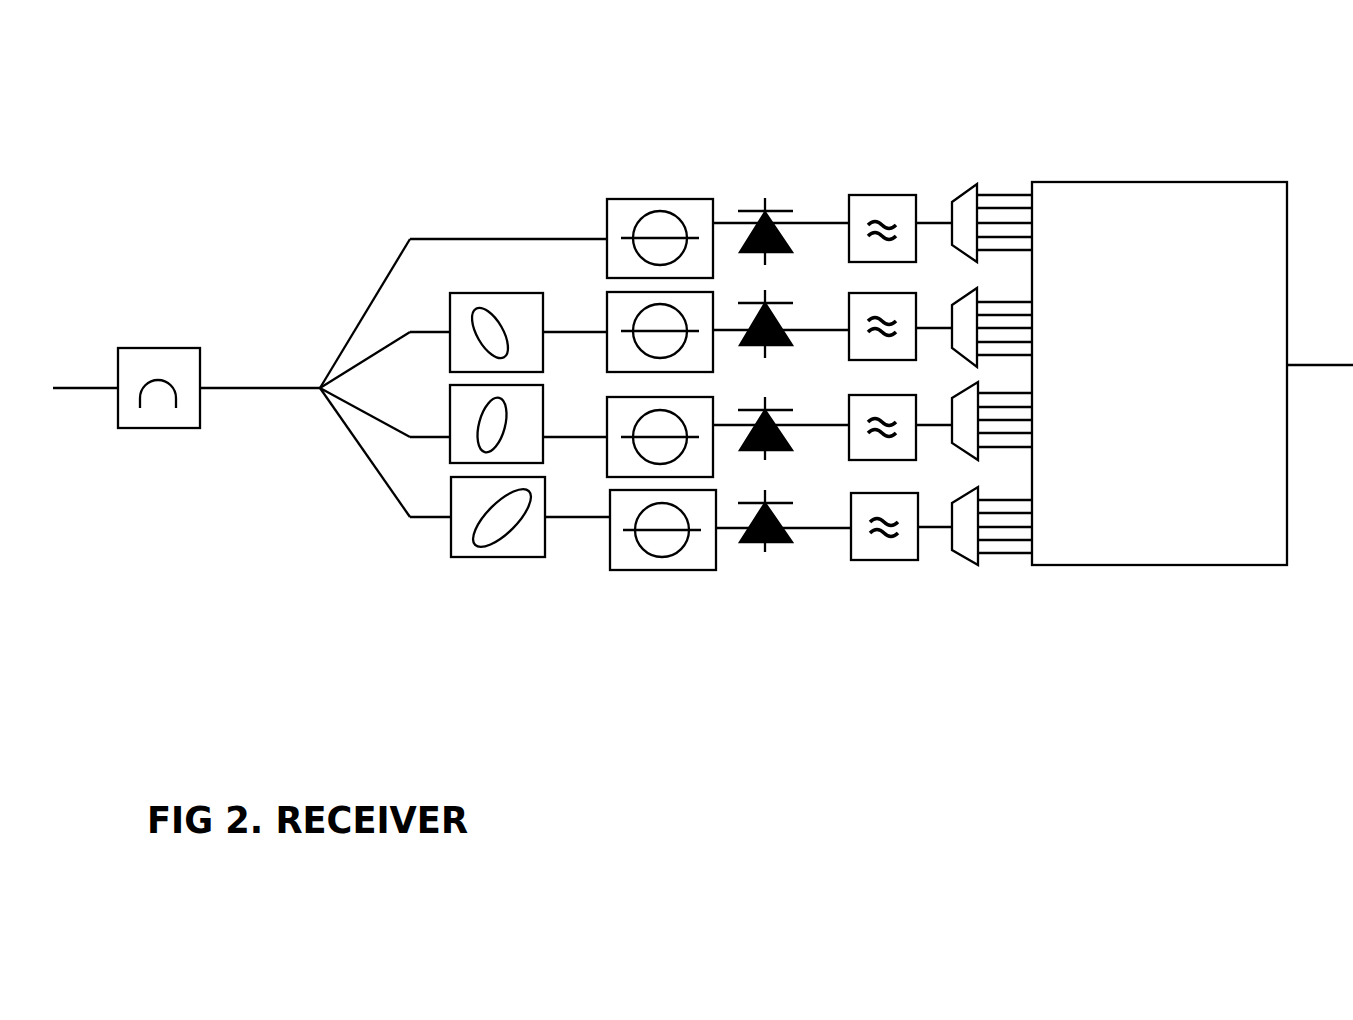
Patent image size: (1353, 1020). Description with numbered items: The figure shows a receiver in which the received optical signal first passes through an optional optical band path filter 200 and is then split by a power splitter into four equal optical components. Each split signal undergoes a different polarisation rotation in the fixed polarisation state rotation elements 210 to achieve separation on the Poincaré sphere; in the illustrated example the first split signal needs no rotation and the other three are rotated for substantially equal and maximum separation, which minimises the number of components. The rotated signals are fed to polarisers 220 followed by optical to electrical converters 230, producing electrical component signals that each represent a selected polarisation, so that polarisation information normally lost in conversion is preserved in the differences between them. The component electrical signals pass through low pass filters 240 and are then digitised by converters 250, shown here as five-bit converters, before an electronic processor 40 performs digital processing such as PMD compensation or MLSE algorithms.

The optical band path filter 200 is at (127, 308).
The fixed polarisation state rotation elements 210 is at (474, 578).
The polarisers 220 is at (663, 590).
The optical to electrical converters 230 is at (748, 182).
The low pass filters 240 is at (880, 172).
The converters 250 is at (967, 590).
The electronic processor 40 is at (1192, 373).